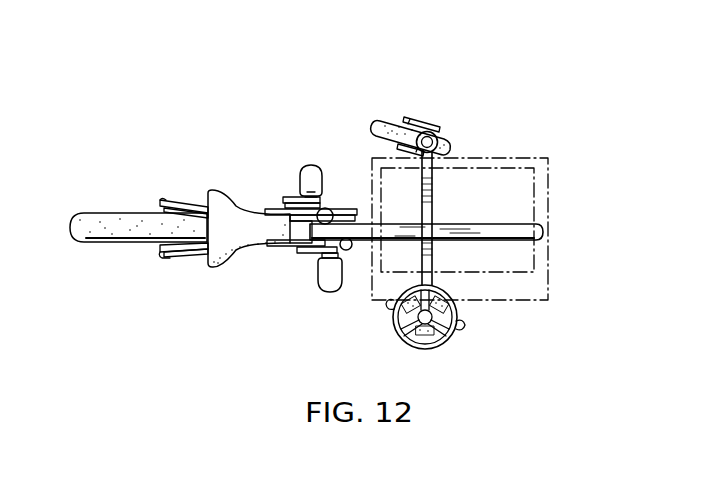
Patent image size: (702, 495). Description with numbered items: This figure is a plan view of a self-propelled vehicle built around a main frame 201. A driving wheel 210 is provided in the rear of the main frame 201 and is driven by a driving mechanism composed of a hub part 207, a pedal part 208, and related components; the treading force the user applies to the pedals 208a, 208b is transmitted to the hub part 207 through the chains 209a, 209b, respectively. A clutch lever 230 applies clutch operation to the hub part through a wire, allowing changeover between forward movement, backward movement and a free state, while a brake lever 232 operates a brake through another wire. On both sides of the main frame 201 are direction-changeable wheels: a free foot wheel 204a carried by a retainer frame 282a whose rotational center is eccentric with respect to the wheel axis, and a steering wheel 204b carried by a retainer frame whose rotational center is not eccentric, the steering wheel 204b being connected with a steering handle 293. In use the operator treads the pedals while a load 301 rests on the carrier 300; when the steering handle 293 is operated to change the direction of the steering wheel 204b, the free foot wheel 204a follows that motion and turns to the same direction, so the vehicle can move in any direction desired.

The main frame 201 is at (492, 229).
The free foot wheel 204a is at (385, 121).
The steering wheel 204b is at (466, 325).
The hub part 207 is at (158, 252).
The pedal part 208 is at (287, 196).
The pedal 208a is at (305, 166).
The pedal 208b is at (325, 273).
The chain 209a is at (183, 203).
The chain 209b is at (185, 256).
The driving wheel 210 is at (81, 245).
The clutch lever 230 is at (352, 251).
The brake lever 232 is at (335, 207).
The retainer frame 282a is at (425, 127).
The steering handle 293 is at (440, 345).
The carrier 300 is at (540, 288).
The load 301 is at (517, 180).